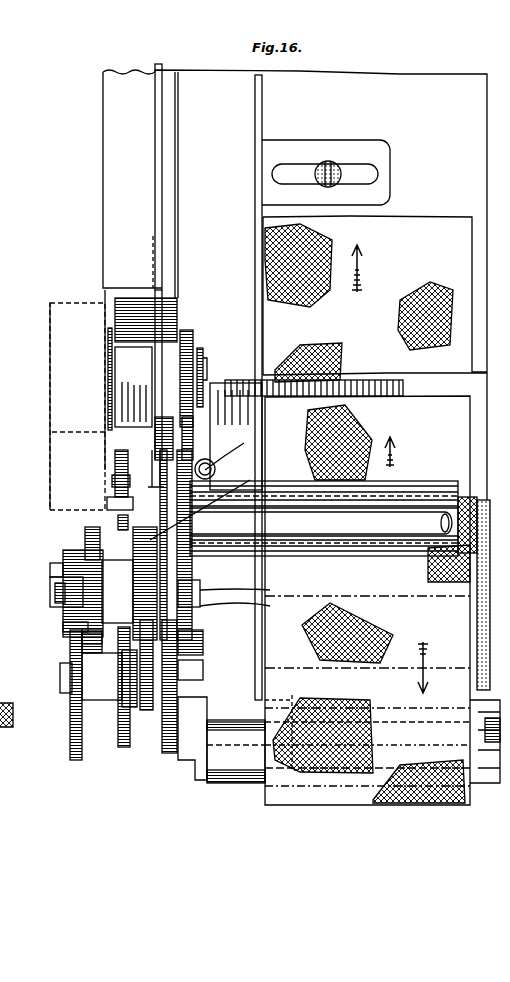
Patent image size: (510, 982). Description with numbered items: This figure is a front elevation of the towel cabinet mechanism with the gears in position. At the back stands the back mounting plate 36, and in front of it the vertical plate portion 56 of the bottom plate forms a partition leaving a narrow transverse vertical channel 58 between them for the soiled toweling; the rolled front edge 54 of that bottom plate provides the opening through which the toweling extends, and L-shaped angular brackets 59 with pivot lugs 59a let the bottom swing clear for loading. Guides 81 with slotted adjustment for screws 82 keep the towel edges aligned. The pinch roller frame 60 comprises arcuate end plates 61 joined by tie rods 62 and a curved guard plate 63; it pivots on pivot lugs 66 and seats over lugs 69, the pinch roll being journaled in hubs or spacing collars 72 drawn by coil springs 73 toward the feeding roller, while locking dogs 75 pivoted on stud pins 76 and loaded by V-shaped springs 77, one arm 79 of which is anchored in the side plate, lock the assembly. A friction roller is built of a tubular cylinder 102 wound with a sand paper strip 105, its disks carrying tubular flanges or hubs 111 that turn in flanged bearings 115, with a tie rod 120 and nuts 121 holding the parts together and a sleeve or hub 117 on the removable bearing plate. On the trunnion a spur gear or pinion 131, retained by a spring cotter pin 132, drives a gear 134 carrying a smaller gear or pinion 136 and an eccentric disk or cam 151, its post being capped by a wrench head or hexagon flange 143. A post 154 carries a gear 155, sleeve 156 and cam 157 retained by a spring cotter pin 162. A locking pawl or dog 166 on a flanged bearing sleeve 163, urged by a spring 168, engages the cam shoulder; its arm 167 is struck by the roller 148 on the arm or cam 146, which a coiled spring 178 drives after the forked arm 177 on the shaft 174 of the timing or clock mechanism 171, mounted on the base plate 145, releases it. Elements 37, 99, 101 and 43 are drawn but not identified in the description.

The back mounting plate 36 is at (376, 90).
The guide bar 37 is at (156, 70).
The transverse vertical channel 58 is at (232, 385).
The guides 81 is at (255, 106).
The screws 82 is at (328, 161).
The guide channel 99 is at (107, 151).
The rack block 101 is at (165, 330).
The locking dogs 75 is at (187, 332).
The V-shaped springs 77 is at (202, 349).
The stud pins 76 is at (207, 365).
The timing gear or clock mechanism 171 is at (54, 349).
The base plate 145 is at (133, 386).
The shaft 174 is at (133, 393).
The vertical plate portion 56 is at (333, 384).
The arm 79 is at (194, 416).
The arcuate end plates 61 is at (194, 433).
The coil springs 73 is at (231, 450).
The eccentric disk or cam 151 is at (221, 464).
The spring 168 is at (207, 502).
The forked arm 177 is at (115, 462).
The coiled spring 178 is at (147, 468).
The arm or cam 146 is at (112, 481).
The roller 148 is at (107, 502).
The arm 167 is at (118, 522).
The gear 134 is at (85, 543).
The smaller gear or pinion 136 is at (63, 560).
The wrench head or hexagon flange 143 is at (52, 574).
The tie rod 120 is at (52, 596).
The nuts 121 is at (58, 600).
The spring cotter pin 132 is at (63, 628).
The spur gear or pinion 131 is at (82, 640).
The flanged bearing sleeve or stud 163 is at (82, 658).
The flanged bearings 115 is at (272, 573).
The post 154 is at (60, 683).
The spring cotter pin 162 is at (70, 700).
The gear 155 is at (70, 750).
The sleeve 156 is at (102, 676).
The locking pawl or dog 166 is at (130, 700).
The cam 157 is at (122, 745).
The pivot lugs 59a is at (158, 725).
The shaft 43 is at (182, 740).
The rolled front edge 54 is at (228, 760).
The angular brackets 59 is at (240, 700).
The lugs 69 is at (203, 670).
The hubs or spacing collars 72 is at (203, 644).
The sand paper strip 105 is at (478, 592).
The tubular flanges or hubs 111 is at (247, 605).
The pivot lugs 66 is at (244, 588).
The tie rods 62 is at (321, 523).
The curved guide or guard plate 63 is at (400, 482).
The pinch roller frame 60 is at (430, 482).
The tubular cylinder 102 is at (478, 612).
The sleeve or hub 117 is at (11, 540).